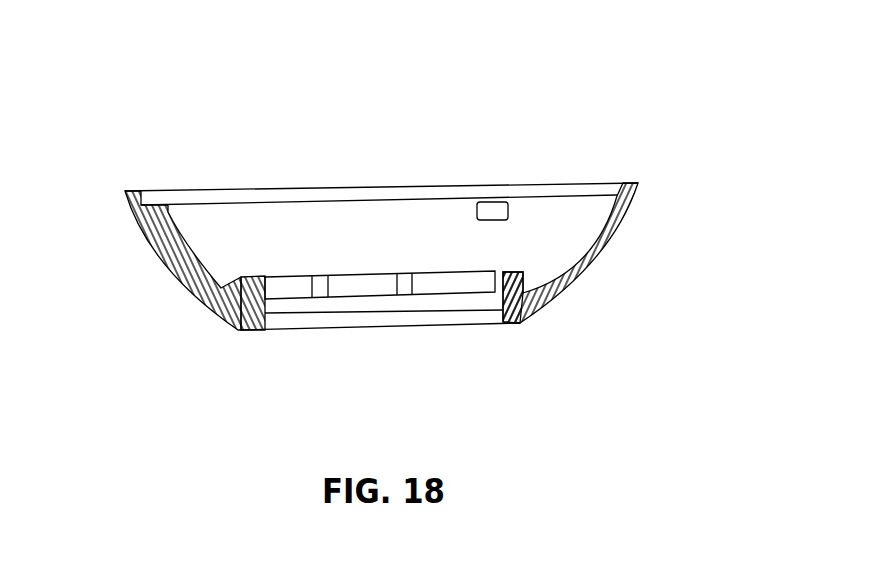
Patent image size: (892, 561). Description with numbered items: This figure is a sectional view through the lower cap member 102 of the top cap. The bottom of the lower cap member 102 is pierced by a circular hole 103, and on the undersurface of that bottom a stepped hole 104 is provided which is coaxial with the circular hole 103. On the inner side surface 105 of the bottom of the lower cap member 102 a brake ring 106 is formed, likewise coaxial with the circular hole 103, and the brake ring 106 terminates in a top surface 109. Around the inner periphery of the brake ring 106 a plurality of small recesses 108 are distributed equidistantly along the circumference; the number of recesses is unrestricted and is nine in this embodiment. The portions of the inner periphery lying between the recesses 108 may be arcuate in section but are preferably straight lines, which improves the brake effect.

The lower cap member 102 is at (686, 101).
The circular hole 103 is at (360, 303).
The stepped hole 104 is at (440, 313).
The inner side surface 105 is at (490, 308).
The brake ring 106 is at (240, 279).
The small recesses 108 is at (327, 274).
The top surface 109 is at (513, 272).